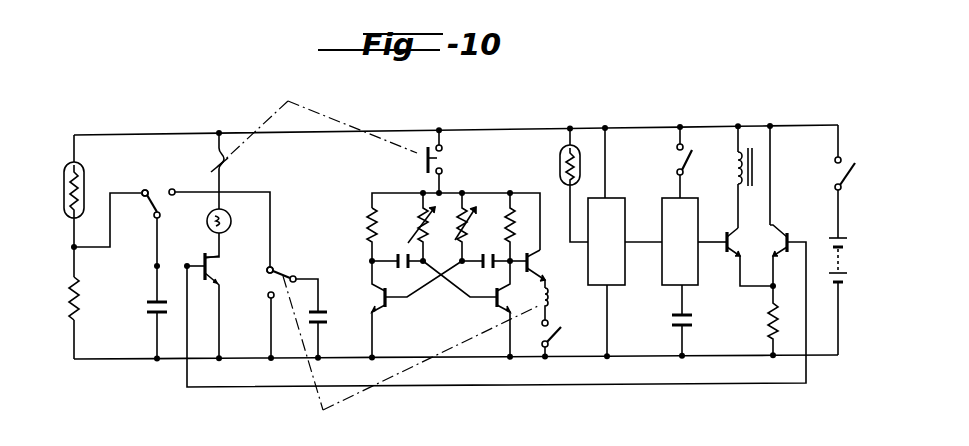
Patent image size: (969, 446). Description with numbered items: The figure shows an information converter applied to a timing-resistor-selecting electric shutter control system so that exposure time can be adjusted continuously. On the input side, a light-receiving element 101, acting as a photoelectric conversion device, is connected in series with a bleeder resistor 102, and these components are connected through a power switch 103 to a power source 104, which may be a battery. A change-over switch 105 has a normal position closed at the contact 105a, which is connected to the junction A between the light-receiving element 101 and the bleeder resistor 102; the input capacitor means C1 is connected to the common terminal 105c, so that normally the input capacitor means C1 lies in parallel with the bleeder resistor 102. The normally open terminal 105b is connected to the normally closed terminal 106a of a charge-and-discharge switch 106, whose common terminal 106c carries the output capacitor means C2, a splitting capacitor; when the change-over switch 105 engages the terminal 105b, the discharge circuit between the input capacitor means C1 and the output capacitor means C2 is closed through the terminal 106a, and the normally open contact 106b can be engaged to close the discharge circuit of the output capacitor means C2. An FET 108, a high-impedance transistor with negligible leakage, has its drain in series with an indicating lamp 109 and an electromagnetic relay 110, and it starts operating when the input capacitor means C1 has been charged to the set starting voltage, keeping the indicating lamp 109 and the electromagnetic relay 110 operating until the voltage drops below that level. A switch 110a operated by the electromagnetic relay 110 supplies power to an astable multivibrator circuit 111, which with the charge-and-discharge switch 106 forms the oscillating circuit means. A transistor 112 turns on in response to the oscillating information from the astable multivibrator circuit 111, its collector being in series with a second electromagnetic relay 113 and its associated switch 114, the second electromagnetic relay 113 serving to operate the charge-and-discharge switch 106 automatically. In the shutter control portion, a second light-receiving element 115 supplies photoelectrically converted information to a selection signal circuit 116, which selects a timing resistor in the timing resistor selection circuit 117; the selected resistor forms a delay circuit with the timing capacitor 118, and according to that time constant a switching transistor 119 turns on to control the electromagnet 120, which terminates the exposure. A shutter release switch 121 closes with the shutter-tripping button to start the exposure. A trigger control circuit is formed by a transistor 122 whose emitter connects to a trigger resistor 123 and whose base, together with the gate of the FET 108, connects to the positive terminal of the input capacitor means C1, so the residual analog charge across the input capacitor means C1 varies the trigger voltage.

The light-receiving element 101 is at (84, 172).
The bleeder resistor 102 is at (79, 298).
The power switch 103 is at (832, 167).
The power source 104 is at (836, 286).
The change-over switch 105 is at (150, 204).
The contact 105a is at (141, 191).
The normally open terminal 105b is at (172, 189).
The common terminal 105c is at (179, 239).
The charge-and-discharge switch 106 is at (281, 268).
The normally closed terminal 106a is at (266, 269).
The normally open contact 106b is at (268, 297).
The common terminal 106c is at (296, 272).
The FET 108 is at (215, 284).
The indicating lamp 109 is at (228, 230).
The electromagnetic relay 110 is at (226, 167).
The switch 110a is at (443, 158).
The astable multivibrator circuit 111 is at (390, 198).
The transistor 112 is at (536, 262).
The second electromagnetic relay 113 is at (550, 298).
The switch 114 is at (556, 332).
The second light-receiving element 115 is at (559, 169).
The selection signal circuit 116 is at (622, 288).
The timing resistor selection circuit 117 is at (698, 283).
The timing capacitor 118 is at (694, 318).
The switching transistor 119 is at (737, 228).
The electromagnet 120 is at (736, 166).
The shutter release switch 121 is at (687, 162).
The transistor 122 is at (776, 232).
The trigger resistor 123 is at (770, 324).
The junction A is at (74, 247).
The input capacitor means C1 is at (148, 308).
The output capacitor means C2 is at (328, 318).